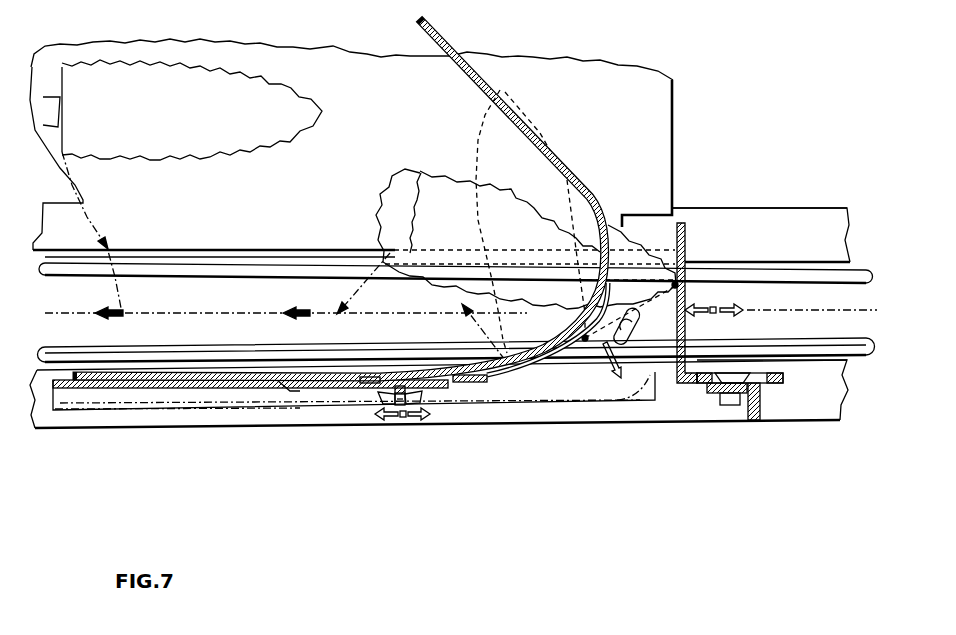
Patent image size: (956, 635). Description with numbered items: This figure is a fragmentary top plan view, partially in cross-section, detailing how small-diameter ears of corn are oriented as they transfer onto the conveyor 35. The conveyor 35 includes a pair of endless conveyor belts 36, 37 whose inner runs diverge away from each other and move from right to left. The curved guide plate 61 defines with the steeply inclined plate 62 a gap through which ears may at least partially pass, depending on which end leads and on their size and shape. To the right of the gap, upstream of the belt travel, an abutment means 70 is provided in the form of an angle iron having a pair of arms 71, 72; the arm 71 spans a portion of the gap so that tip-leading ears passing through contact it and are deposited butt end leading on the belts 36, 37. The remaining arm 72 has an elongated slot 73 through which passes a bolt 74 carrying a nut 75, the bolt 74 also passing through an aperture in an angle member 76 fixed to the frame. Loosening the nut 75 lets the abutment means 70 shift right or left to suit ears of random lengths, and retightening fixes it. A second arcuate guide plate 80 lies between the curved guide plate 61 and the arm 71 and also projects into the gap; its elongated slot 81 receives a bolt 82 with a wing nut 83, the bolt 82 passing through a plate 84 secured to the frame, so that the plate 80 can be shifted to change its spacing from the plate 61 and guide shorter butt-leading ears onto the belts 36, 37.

The conveyor 35 is at (186, 343).
The endless conveyor belt 36 is at (864, 280).
The endless conveyor belt 37 is at (864, 353).
The curved guide plate 61 is at (557, 157).
The steeply inclined plate 62 is at (460, 221).
The abutment means 70 is at (700, 220).
The arm 71 is at (685, 248).
The arm 72 is at (777, 382).
The elongated slot 73 is at (762, 372).
The bolt 74 is at (733, 372).
The nut 75 is at (717, 393).
The angle member 76 is at (757, 420).
The curved guide plate 80 is at (543, 377).
The elongated slot 81 is at (458, 387).
The bolt 82 is at (405, 385).
The wing nut 83 is at (375, 405).
The plate 84 is at (307, 390).